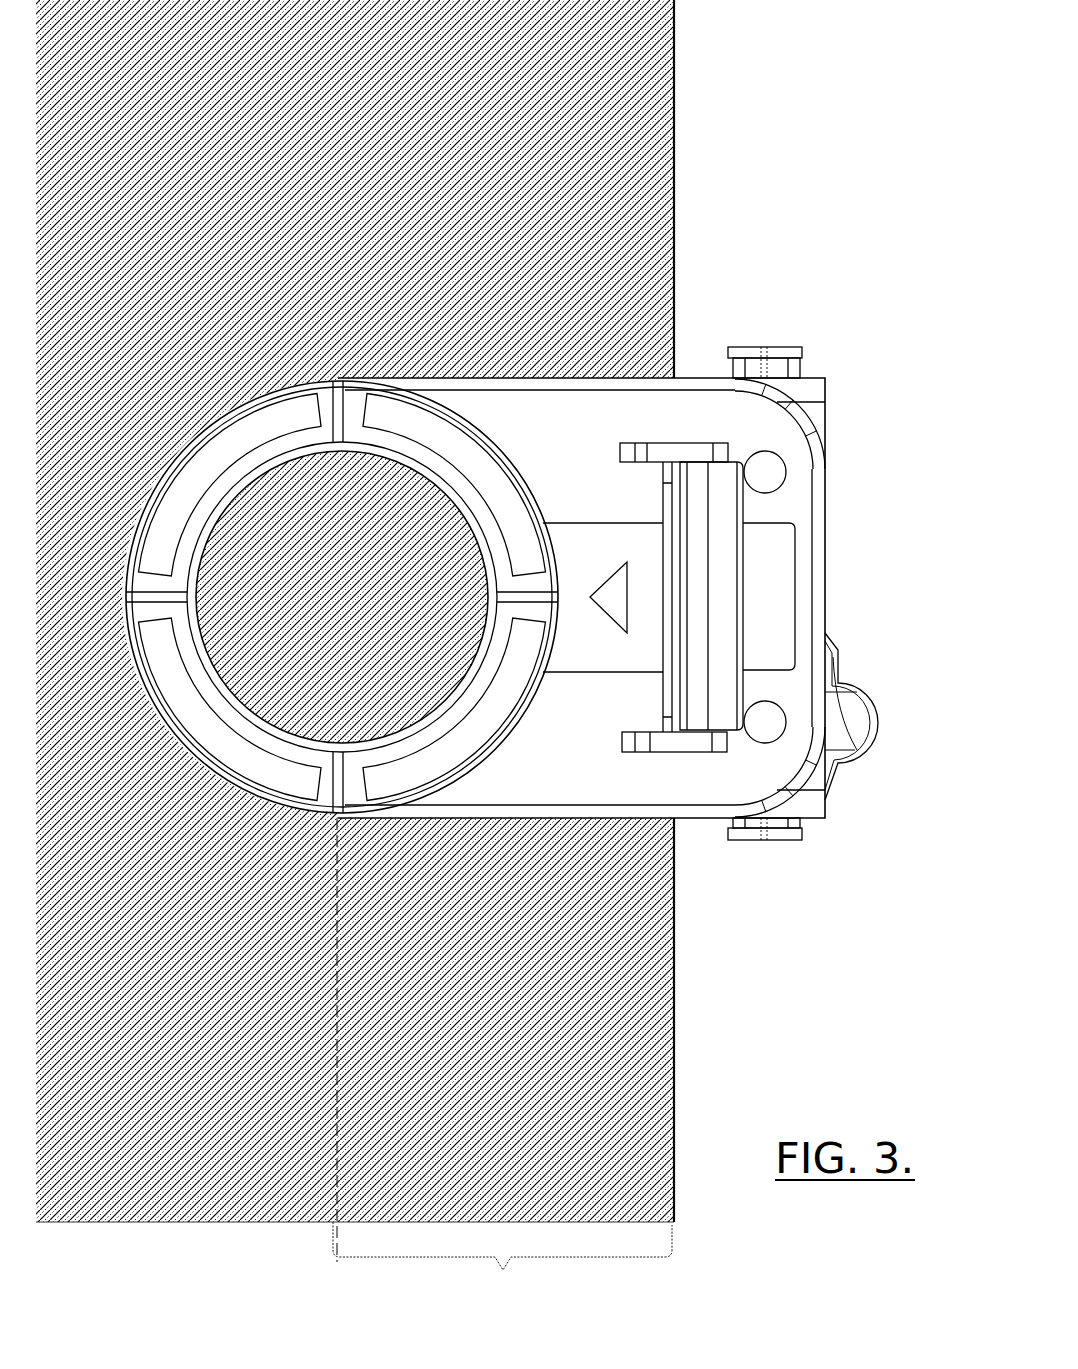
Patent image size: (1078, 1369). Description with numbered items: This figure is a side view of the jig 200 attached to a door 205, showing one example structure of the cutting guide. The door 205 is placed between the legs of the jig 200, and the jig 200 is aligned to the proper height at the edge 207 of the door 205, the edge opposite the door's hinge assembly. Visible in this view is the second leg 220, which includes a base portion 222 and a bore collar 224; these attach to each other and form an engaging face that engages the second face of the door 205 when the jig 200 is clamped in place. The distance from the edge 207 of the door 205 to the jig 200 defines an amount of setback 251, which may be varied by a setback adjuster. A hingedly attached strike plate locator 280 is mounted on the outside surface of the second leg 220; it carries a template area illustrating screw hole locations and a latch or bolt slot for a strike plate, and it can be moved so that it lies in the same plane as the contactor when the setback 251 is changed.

The jig 200 is at (862, 278).
The door 205 is at (548, 120).
The edge 207 is at (673, 175).
The second leg 220 is at (693, 812).
The base portion 222 is at (715, 387).
The bore collar 224 is at (458, 455).
The strike plate locator 280 is at (680, 597).
The setback 251 is at (502, 1262).